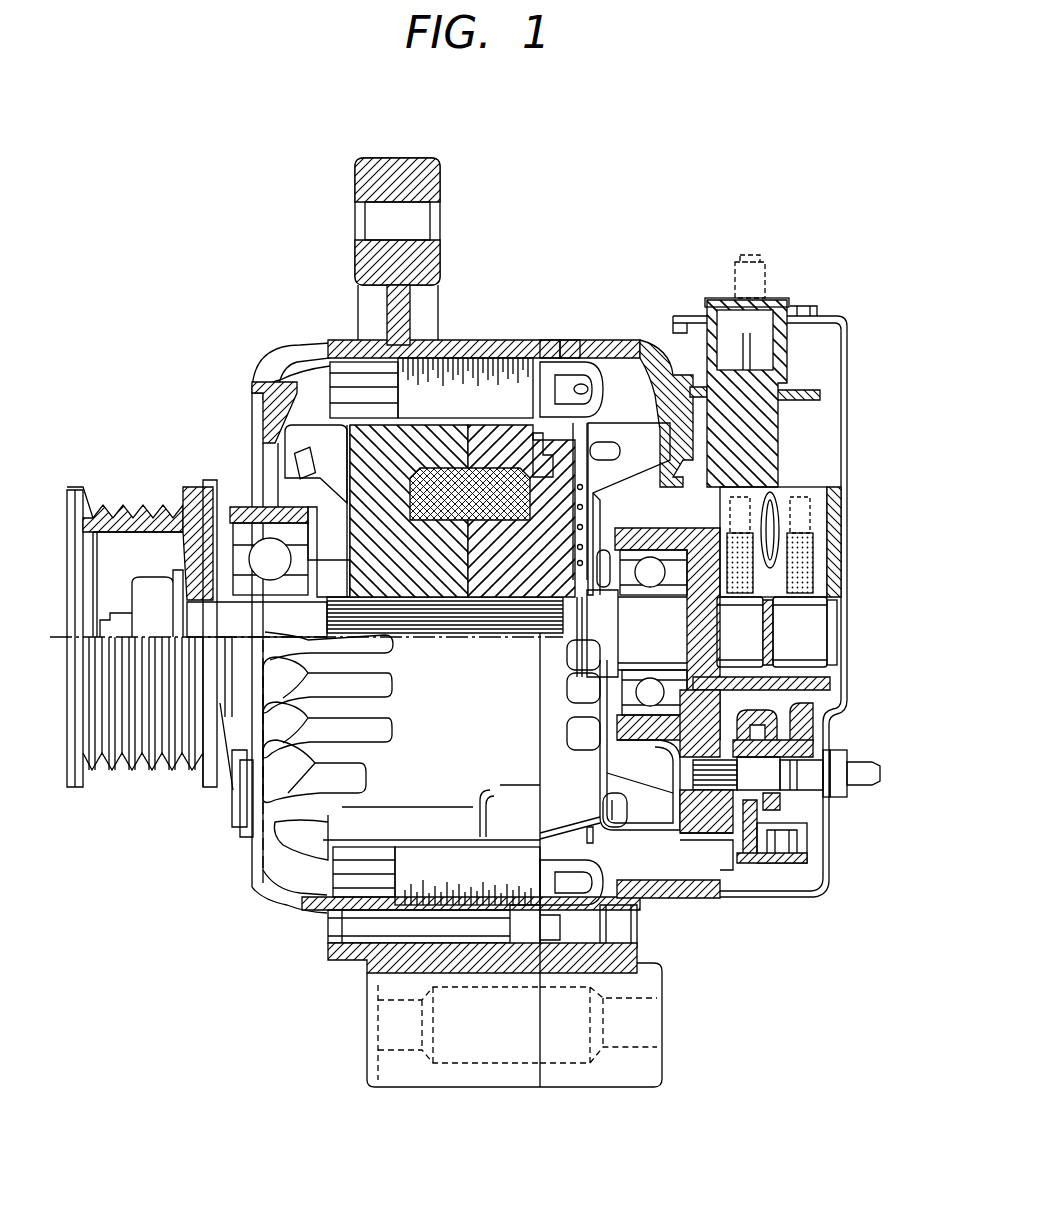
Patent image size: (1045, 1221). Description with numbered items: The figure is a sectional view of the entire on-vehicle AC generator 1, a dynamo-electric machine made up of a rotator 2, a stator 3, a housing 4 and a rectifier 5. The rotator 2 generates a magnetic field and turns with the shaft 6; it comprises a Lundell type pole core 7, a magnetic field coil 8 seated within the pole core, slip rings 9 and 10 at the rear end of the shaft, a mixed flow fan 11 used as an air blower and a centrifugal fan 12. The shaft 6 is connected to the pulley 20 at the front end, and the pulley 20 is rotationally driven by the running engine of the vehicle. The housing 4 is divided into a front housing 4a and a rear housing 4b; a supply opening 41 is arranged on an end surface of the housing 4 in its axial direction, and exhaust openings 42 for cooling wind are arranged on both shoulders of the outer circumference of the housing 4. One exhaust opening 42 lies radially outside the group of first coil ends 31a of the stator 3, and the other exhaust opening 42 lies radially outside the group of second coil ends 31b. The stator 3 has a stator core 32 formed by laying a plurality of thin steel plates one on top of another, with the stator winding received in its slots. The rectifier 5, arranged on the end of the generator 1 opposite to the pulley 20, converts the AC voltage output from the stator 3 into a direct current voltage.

The on-vehicle AC generator 1 is at (710, 153).
The rotator 2 is at (397, 555).
The stator 3 is at (505, 531).
The housing 4 is at (472, 280).
The front housing 4a is at (518, 355).
The rear housing 4b is at (555, 352).
The rectifier 5 is at (770, 813).
The shaft 6 is at (187, 567).
The Lundell type pole core 7 is at (423, 575).
The magnetic field coil 8 is at (470, 408).
The slip ring 9 is at (740, 620).
The slip ring 10 is at (808, 650).
The mixed flow fan 11 is at (293, 433).
The centrifugal fan 12 is at (690, 430).
The pulley 20 is at (78, 490).
The first coil ends 31a is at (613, 372).
The second coil ends 31b is at (324, 386).
The stator core 32 is at (483, 372).
The supply opening 41 is at (675, 512).
The exhaust opening 42 is at (340, 345).